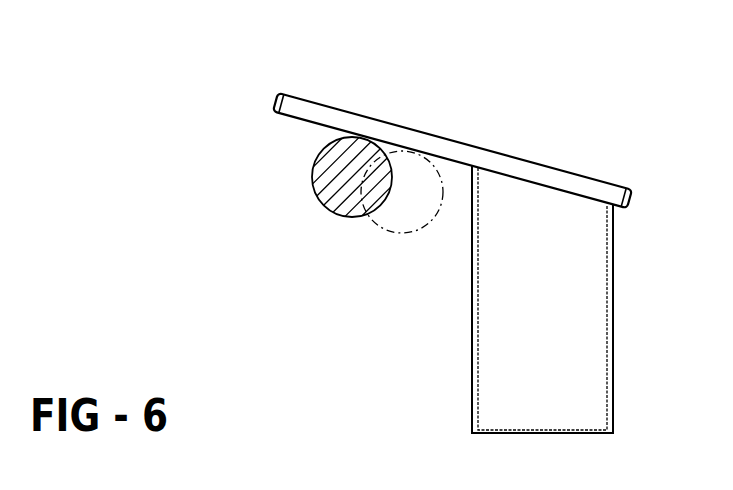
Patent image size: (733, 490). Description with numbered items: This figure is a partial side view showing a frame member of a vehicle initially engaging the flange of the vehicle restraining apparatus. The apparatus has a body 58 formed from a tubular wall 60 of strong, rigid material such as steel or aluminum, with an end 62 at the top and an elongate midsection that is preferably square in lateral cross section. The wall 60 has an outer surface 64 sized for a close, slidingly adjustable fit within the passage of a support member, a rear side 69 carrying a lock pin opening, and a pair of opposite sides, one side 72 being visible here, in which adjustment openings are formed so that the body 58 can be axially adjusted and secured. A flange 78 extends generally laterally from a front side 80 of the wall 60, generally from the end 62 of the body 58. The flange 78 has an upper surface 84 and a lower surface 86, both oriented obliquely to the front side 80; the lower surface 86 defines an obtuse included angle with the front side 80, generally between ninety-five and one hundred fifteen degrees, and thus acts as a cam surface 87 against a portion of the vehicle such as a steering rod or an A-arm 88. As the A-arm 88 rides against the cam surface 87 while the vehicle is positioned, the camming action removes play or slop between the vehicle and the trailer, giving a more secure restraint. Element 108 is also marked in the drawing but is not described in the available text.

The body 58 is at (613, 364).
The tubular wall 60 is at (585, 417).
The end 62 is at (548, 186).
The outer surface 64 is at (472, 315).
The rear side 69 is at (613, 286).
The side 72 is at (503, 380).
The flange 78 is at (360, 110).
The front side 80 is at (472, 294).
The upper surface 84 is at (307, 97).
The lower surface 86 is at (275, 117).
The cam surface 87 is at (295, 124).
The A-arm 88 is at (313, 185).
The cover end portion 108 is at (275, 95).